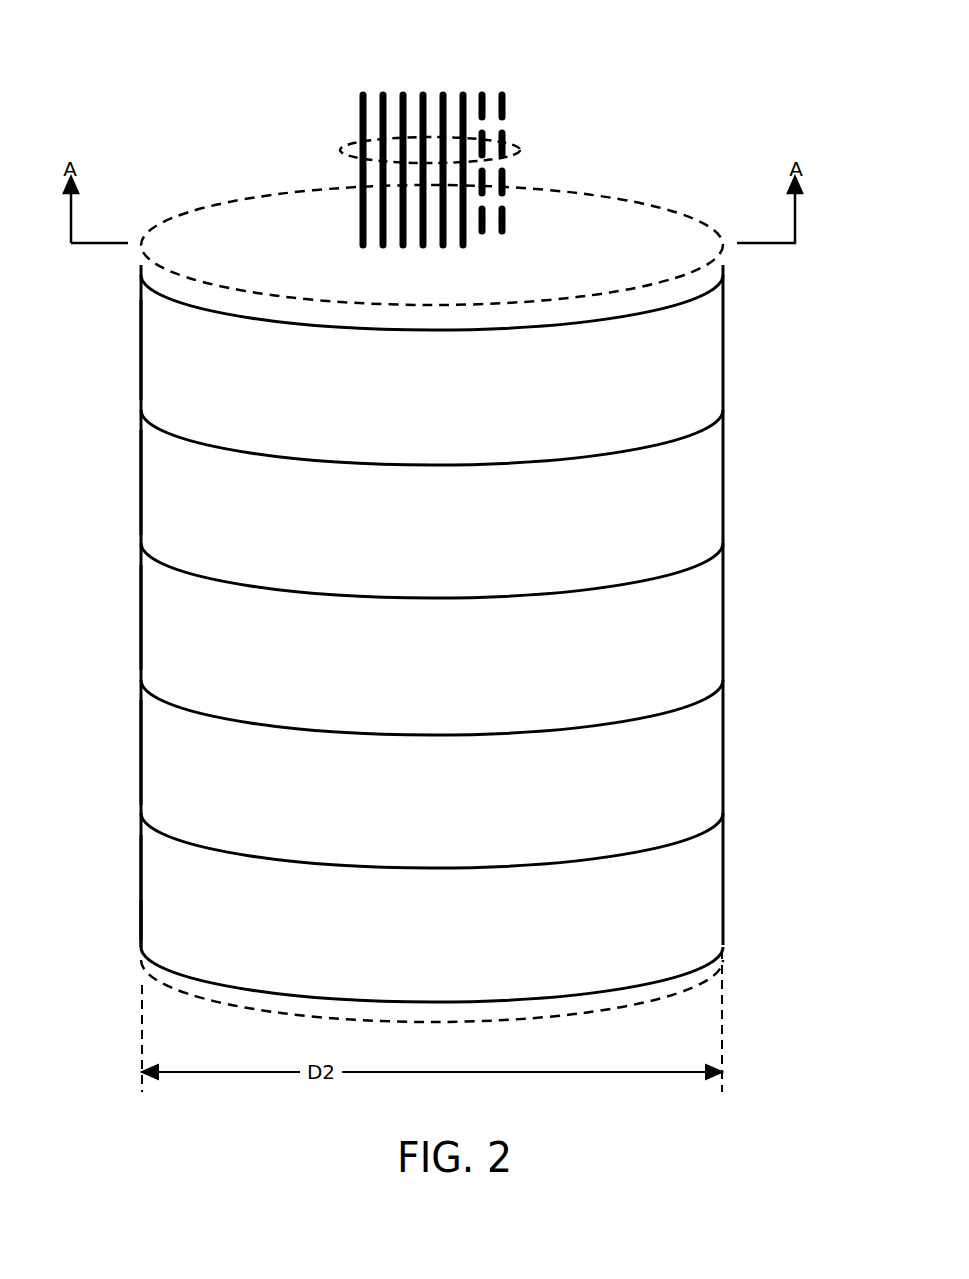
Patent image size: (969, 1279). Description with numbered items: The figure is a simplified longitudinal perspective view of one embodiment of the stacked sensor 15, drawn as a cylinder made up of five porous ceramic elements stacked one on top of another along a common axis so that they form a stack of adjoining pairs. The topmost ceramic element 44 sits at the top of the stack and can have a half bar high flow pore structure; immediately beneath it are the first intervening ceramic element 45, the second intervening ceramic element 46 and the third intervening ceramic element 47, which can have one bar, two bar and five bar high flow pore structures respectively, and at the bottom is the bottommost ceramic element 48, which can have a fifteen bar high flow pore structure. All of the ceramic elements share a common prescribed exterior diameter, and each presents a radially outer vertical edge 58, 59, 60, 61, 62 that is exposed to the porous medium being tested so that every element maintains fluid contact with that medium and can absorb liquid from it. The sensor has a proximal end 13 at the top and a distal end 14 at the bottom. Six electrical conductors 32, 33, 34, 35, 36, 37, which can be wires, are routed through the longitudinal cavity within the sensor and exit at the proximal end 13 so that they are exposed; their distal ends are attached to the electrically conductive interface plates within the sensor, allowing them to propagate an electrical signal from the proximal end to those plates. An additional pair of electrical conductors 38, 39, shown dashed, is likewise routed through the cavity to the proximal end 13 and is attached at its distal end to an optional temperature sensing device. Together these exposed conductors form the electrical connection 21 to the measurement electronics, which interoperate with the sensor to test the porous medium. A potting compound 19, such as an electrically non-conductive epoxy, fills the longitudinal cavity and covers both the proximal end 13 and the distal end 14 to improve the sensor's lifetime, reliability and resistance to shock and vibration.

The proximal end 13 is at (223, 200).
The distal end 14 is at (219, 1004).
The stacked sensor 15 is at (136, 100).
The potting compound 19 is at (698, 284).
The electrical connection 21 is at (520, 152).
The electrical conductor 32 is at (363, 90).
The electrical conductor 33 is at (383, 90).
The electrical conductor 34 is at (403, 90).
The electrical conductor 35 is at (423, 90).
The electrical conductor 36 is at (443, 90).
The electrical conductor 37 is at (463, 90).
The additional electrical conductor 38 is at (482, 90).
The additional electrical conductor 39 is at (502, 90).
The topmost ceramic element 44 is at (441, 411).
The first intervening ceramic element 45 is at (441, 551).
The second intervening ceramic element 46 is at (441, 681).
The third intervening ceramic element 47 is at (441, 814).
The bottommost ceramic element 48 is at (441, 949).
The radially outer vertical edge 58 is at (140, 347).
The radially outer vertical edge 59 is at (140, 484).
The radially outer vertical edge 60 is at (140, 620).
The radially outer vertical edge 61 is at (140, 748).
The radially outer vertical edge 62 is at (140, 878).